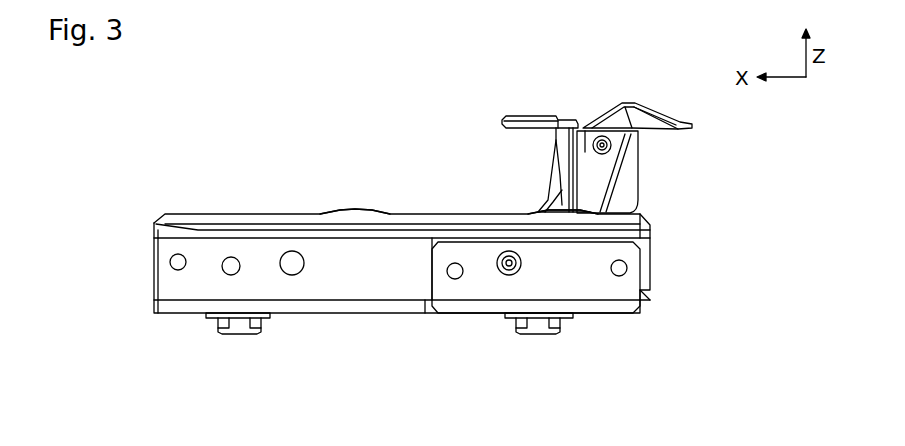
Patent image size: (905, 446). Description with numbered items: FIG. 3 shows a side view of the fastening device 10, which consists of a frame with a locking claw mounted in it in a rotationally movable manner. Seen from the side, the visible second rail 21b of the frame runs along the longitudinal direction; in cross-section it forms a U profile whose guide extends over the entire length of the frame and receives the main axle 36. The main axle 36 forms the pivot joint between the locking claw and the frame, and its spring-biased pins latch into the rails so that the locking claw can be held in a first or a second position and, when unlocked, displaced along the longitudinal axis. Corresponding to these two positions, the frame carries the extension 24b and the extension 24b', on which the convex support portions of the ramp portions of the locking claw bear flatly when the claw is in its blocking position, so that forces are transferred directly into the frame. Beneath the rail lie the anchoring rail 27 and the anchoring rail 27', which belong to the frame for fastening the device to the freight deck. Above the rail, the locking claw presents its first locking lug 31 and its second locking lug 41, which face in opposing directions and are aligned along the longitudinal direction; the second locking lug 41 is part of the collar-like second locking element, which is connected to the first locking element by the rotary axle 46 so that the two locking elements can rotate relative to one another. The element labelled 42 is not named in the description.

The fastening device 10 is at (328, 128).
The second rail 21b is at (312, 269).
The extension 24b is at (355, 315).
The extension 24b' is at (581, 328).
The anchoring rail 27 is at (215, 378).
The anchoring rail 27' is at (539, 368).
The first locking lug 31 is at (637, 116).
The main axle 36 is at (509, 275).
The second locking lug 41 is at (525, 122).
The holder block 42 is at (630, 179).
The rotary axle 46 is at (602, 145).